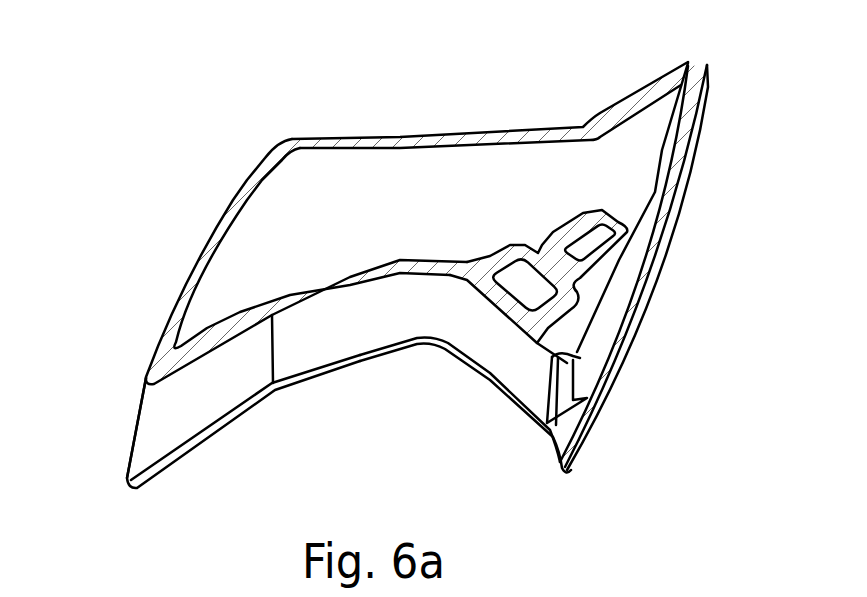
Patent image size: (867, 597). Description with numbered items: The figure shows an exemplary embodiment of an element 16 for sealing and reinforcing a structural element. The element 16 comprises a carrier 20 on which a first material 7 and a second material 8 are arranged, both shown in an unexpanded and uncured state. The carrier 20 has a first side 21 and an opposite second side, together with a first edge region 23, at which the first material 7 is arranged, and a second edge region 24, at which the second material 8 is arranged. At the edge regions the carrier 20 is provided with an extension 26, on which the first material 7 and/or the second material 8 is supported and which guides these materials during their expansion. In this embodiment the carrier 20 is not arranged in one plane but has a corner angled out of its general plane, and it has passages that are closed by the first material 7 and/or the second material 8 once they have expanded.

The element for sealing and reinforcing a structural element 16 is at (279, 83).
The carrier 20 is at (528, 170).
The first side 21 is at (428, 222).
The first edge region 23 is at (245, 195).
The second edge region 24 is at (611, 303).
The first material 7 is at (305, 343).
The extension 26 is at (382, 357).
The second material 8 is at (570, 427).